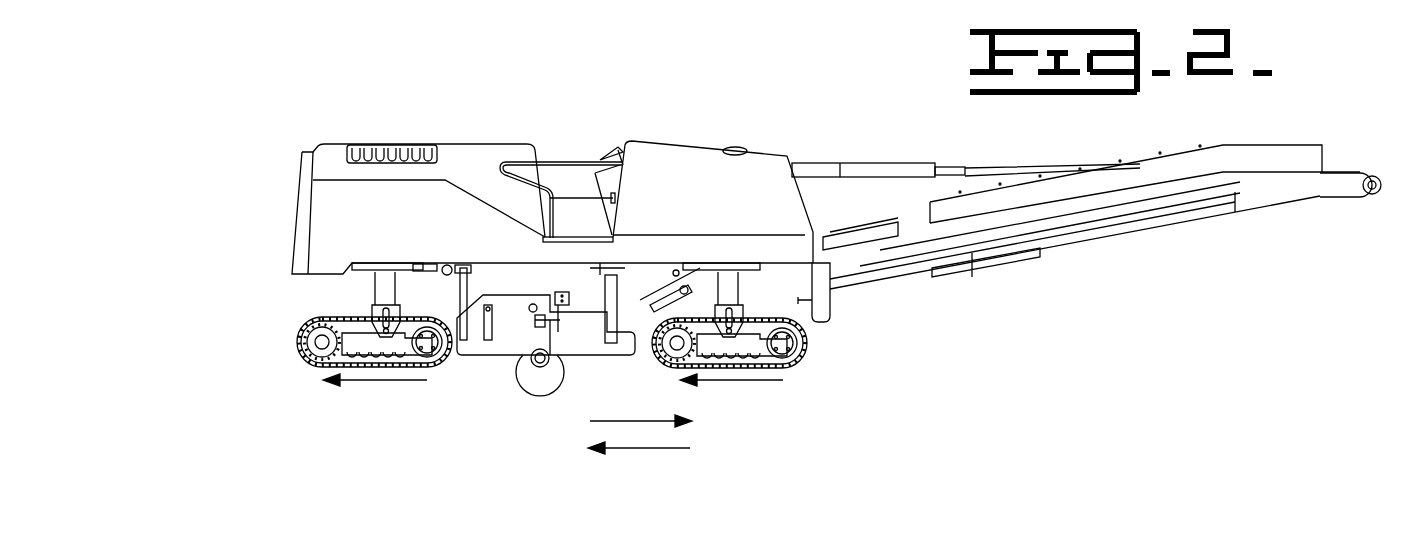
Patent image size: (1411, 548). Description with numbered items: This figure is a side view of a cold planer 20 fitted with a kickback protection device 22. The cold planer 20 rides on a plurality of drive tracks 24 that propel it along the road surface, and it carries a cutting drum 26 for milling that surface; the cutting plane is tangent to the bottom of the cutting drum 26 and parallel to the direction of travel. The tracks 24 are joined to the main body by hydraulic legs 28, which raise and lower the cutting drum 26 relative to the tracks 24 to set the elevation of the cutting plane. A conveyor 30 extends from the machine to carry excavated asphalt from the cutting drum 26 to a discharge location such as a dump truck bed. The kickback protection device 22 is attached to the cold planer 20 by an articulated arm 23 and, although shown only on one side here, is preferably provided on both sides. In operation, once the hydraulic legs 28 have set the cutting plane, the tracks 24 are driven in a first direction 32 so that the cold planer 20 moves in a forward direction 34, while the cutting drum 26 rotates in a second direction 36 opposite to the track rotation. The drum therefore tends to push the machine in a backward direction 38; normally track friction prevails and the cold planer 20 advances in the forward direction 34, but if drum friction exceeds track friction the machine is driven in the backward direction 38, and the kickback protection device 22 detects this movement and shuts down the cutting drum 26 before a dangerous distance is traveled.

The cold planer 20 is at (812, 115).
The kickback protection device 22 is at (528, 392).
The articulated arm 23 is at (565, 322).
The drive tracks 24 is at (298, 341).
The cutting drum 26 is at (523, 373).
The hydraulic legs 28 is at (376, 283).
The conveyor 30 is at (1352, 173).
The first direction 32 is at (370, 382).
The forward direction 34 is at (660, 421).
The second direction 36 is at (566, 362).
The backward direction 38 is at (690, 448).